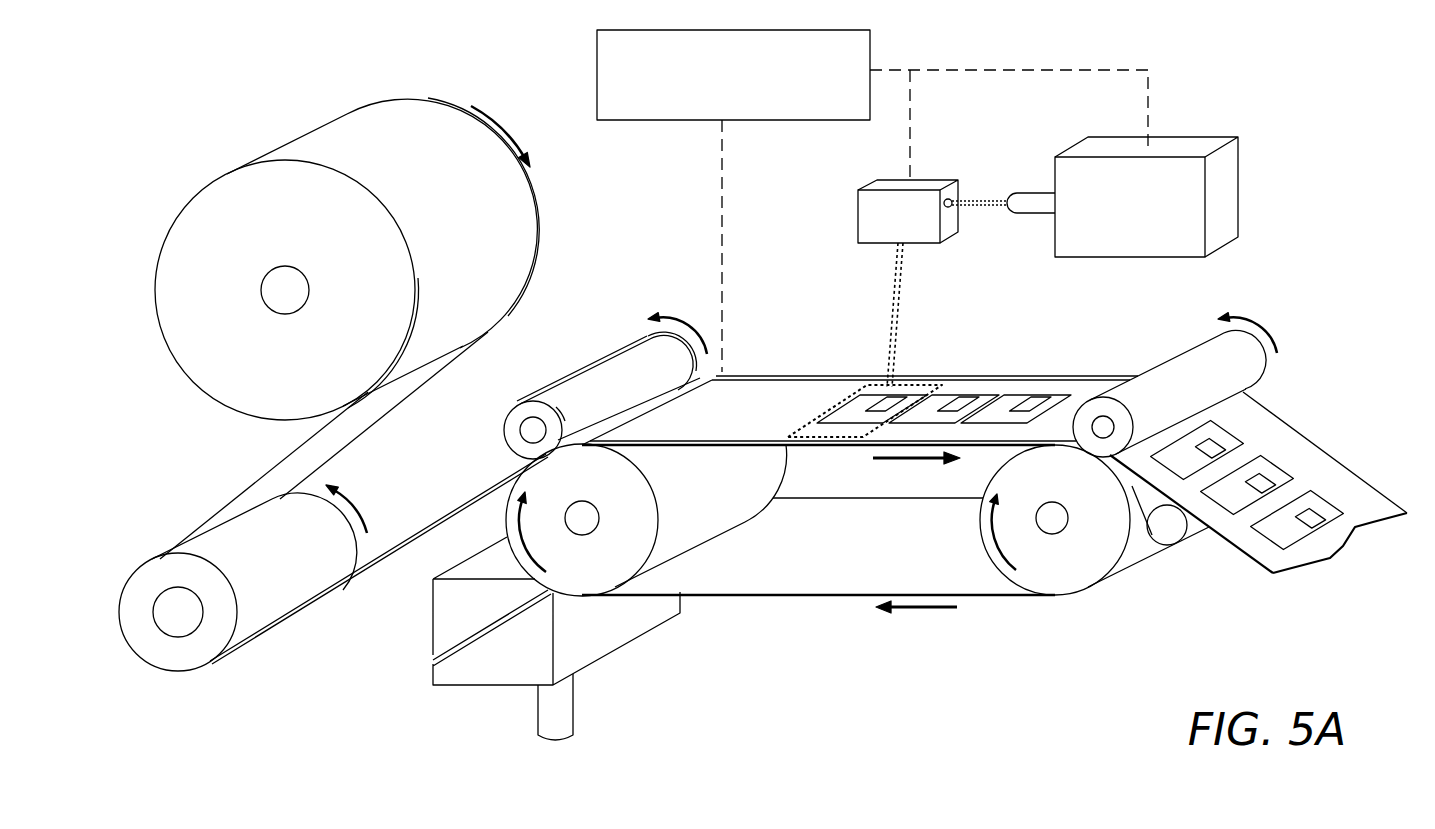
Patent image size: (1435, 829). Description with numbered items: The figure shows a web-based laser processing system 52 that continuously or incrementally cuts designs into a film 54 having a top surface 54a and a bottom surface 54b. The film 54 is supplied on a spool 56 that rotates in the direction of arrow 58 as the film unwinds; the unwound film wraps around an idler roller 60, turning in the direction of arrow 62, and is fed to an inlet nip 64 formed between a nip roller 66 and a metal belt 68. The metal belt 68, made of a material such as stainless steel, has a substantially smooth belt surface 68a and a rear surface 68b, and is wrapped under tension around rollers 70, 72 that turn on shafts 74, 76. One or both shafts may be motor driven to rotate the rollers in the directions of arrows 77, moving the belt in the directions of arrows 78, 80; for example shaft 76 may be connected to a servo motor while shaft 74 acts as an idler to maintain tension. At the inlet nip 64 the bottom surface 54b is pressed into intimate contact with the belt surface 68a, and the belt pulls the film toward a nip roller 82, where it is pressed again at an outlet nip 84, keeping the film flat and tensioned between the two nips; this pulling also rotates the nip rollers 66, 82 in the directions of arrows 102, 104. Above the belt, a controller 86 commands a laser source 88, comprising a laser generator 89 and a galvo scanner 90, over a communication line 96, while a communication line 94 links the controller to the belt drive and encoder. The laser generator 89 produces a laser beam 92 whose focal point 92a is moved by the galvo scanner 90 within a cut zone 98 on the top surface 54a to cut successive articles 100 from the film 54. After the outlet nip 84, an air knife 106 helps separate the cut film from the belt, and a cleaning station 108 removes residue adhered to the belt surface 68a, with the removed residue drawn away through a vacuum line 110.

The laser processing system 52 is at (939, 748).
The film 54 is at (466, 334).
The top surface 54a is at (512, 226).
The bottom surface 54b is at (388, 560).
The spool 56 is at (233, 203).
The arrow 58 is at (497, 125).
The idler roller 60 is at (183, 663).
The arrow 62 is at (365, 516).
The inlet nip 64 is at (505, 459).
The nip roller 66 is at (623, 353).
The metal belt 68 is at (810, 608).
The belt surface 68a is at (1013, 374).
The rear surface 68b is at (866, 557).
The roller 70 is at (602, 575).
The roller 72 is at (1070, 578).
The shaft 74 is at (578, 503).
The shaft 76 is at (1065, 522).
The arrows 77 is at (532, 552).
The arrow 78 is at (897, 463).
The arrow 80 is at (935, 610).
The nip roller 82 is at (1202, 347).
The outlet nip 84 is at (1109, 367).
The controller 86 is at (768, 121).
The laser source 88 is at (1307, 156).
The laser generator 89 is at (1232, 178).
The galvo scanner 90 is at (933, 180).
The laser beam 92 is at (975, 209).
The focal point 92a is at (880, 402).
The communication line 94 is at (722, 186).
The communication line 96 is at (910, 95).
The cut zone 98 is at (828, 437).
The articles 100 is at (912, 395).
The arrow 102 is at (698, 325).
The arrow 104 is at (1273, 325).
The air knife 106 is at (1188, 528).
The cleaning station 108 is at (472, 676).
The vacuum line 110 is at (570, 703).